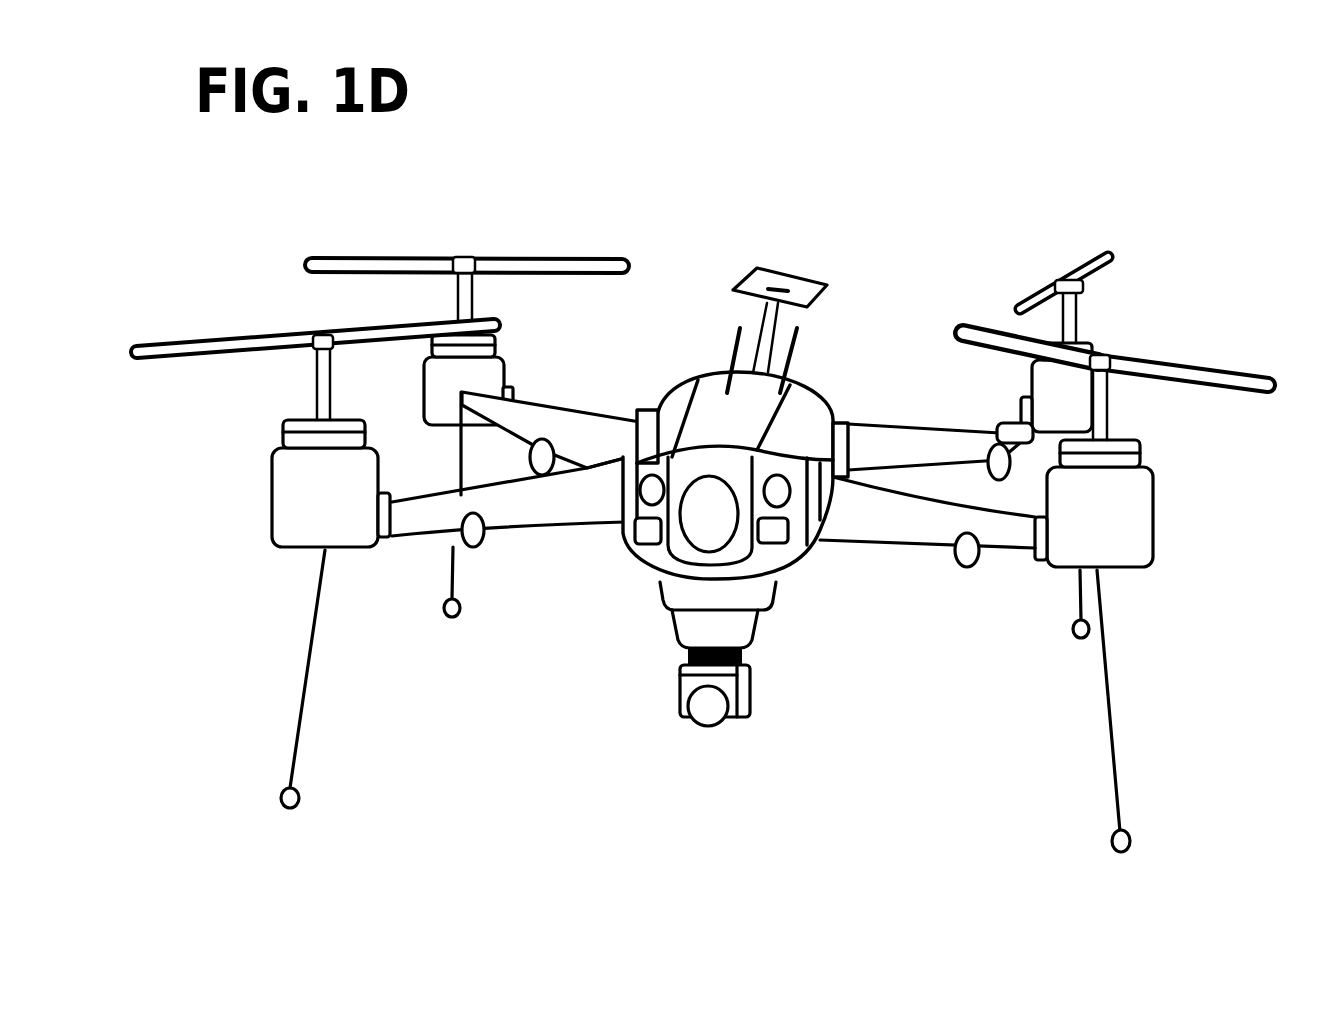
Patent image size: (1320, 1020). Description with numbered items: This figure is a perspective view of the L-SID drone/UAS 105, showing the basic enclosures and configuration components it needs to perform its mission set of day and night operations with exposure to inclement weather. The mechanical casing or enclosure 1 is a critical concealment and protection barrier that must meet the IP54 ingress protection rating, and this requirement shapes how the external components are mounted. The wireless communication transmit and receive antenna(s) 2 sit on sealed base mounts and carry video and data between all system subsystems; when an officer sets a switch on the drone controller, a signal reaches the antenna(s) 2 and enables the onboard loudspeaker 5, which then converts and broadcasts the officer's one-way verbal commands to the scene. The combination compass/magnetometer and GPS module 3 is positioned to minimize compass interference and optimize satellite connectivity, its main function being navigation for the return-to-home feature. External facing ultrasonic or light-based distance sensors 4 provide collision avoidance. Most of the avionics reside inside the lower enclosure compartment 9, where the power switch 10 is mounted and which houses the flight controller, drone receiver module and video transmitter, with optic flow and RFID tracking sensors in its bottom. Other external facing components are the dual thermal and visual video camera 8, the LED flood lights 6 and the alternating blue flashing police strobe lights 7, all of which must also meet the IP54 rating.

The drone/UAS 105 is at (930, 128).
The enclosure 1 is at (287, 485).
The antenna 2 is at (730, 343).
The GPS module 3 is at (800, 278).
The distance sensors 4 is at (537, 440).
The loudspeaker 5 is at (710, 523).
The LED flood lights 6 is at (648, 532).
The blue flashing police lights 7 is at (652, 488).
The video camera 8 is at (713, 707).
The compartment 9 is at (817, 557).
The power switch 10 is at (807, 573).